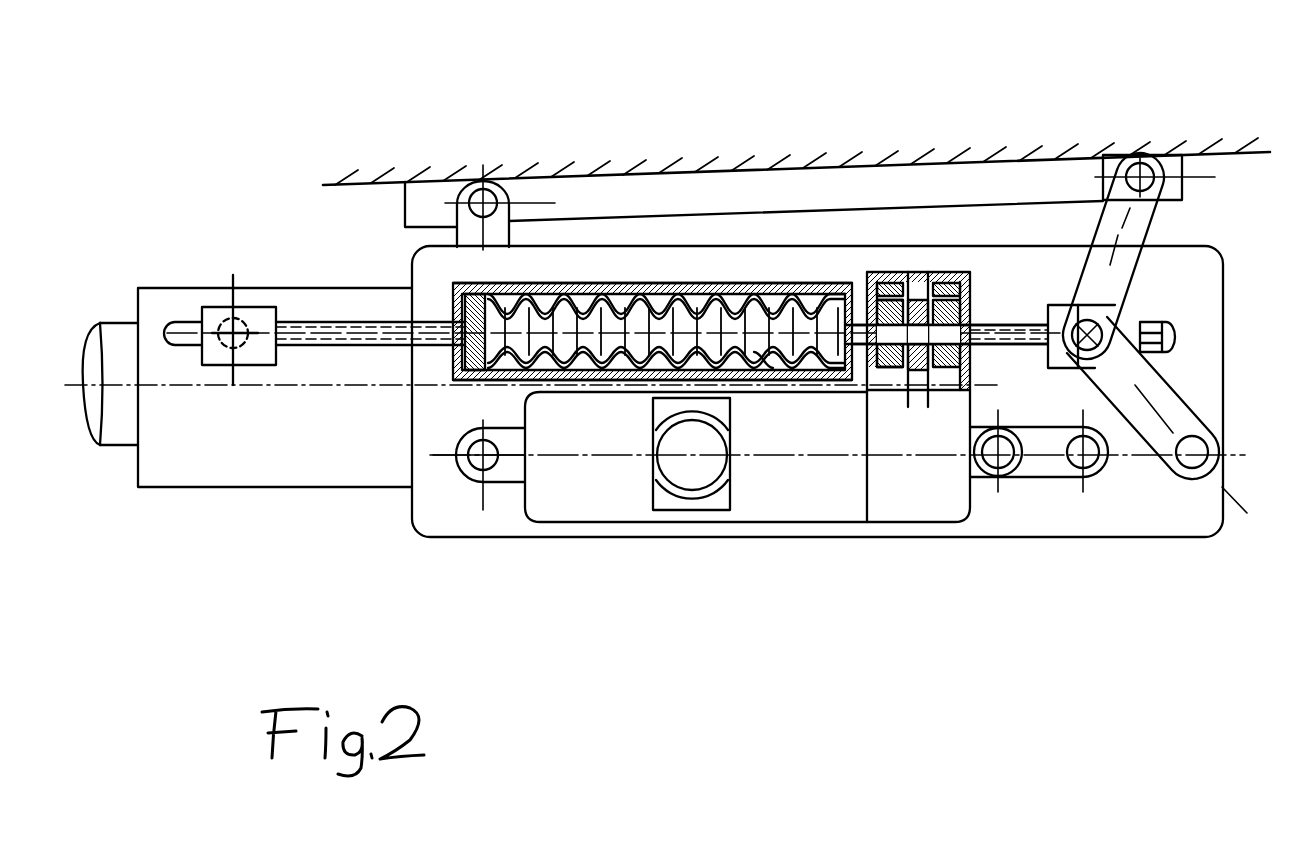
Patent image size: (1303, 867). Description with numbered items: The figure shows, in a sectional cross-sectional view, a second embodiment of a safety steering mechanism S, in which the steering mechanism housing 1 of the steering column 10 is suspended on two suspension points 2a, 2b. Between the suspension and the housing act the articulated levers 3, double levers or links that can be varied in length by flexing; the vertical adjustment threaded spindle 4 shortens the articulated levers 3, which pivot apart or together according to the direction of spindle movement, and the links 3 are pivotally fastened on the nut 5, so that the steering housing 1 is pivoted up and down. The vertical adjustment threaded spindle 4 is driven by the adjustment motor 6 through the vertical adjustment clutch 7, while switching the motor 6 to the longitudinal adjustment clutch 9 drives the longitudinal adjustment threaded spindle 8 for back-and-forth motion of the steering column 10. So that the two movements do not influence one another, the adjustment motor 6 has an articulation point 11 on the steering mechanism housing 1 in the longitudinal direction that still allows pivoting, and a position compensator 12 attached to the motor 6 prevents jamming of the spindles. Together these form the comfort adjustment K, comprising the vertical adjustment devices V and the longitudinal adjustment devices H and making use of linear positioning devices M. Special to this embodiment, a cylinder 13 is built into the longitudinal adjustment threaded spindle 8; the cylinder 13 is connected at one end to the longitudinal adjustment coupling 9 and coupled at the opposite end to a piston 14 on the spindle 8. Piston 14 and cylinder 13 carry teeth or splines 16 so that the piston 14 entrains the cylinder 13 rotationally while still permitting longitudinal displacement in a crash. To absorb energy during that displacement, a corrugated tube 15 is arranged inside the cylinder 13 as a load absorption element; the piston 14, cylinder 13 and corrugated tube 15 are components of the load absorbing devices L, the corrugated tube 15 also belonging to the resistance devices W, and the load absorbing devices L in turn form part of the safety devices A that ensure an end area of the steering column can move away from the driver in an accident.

The steering mechanism housing 1 is at (437, 522).
The suspension point 2a is at (477, 188).
The suspension point 2b is at (1141, 165).
The articulated lever 3 is at (1114, 290).
The vertical adjustment threaded spindle 4 is at (1022, 325).
The nut 5 is at (1130, 318).
The adjustment motor 6 is at (612, 507).
The vertical adjustment clutch 7 is at (937, 372).
The longitudinal adjustment threaded spindle 8 is at (290, 318).
The longitudinal adjustment clutch 9 is at (893, 388).
The steering column 10 is at (213, 468).
The articulation point 11 is at (464, 468).
The position compensator 12 is at (1047, 473).
The cylinder 13 is at (598, 287).
The piston 14 is at (545, 287).
The corrugated tube 15 is at (722, 278).
The teeth or splines 16 is at (468, 351).
The safety devices A is at (790, 266).
The longitudinal adjustment devices H is at (380, 308).
The comfort adjustment K is at (929, 252).
The load absorbing devices L is at (649, 305).
The linear positioning devices M is at (192, 303).
The safety steering mechanism S is at (735, 622).
The vertical adjustment devices V is at (1175, 364).
The resistance devices W is at (773, 350).